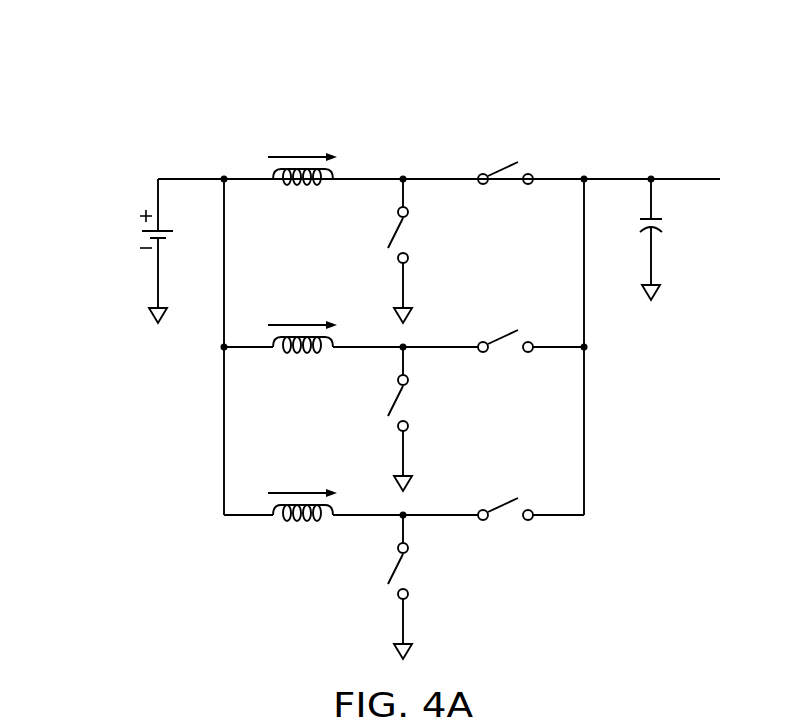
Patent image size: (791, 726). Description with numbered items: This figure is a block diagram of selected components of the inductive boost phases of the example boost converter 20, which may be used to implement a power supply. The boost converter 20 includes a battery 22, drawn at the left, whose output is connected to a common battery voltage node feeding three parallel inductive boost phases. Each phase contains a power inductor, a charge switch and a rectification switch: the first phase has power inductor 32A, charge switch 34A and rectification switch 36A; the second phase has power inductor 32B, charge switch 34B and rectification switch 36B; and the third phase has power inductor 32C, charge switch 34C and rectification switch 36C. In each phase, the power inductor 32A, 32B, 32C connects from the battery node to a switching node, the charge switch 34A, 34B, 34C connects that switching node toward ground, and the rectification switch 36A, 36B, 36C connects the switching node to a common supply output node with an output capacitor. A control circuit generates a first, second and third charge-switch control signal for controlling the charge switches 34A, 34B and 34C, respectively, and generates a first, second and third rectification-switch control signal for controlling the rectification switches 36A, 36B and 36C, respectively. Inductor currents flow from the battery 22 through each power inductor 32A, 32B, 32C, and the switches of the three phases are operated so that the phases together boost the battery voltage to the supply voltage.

The boost converter 20 is at (229, 90).
The battery 22 is at (141, 236).
The power inductor 32A is at (288, 182).
The power inductor 32B is at (288, 350).
The power inductor 32C is at (288, 518).
The charge switch 34A is at (395, 232).
The charge switch 34B is at (395, 400).
The charge switch 34C is at (395, 568).
The rectification switch 36A is at (503, 169).
The rectification switch 36B is at (503, 337).
The rectification switch 36C is at (503, 505).